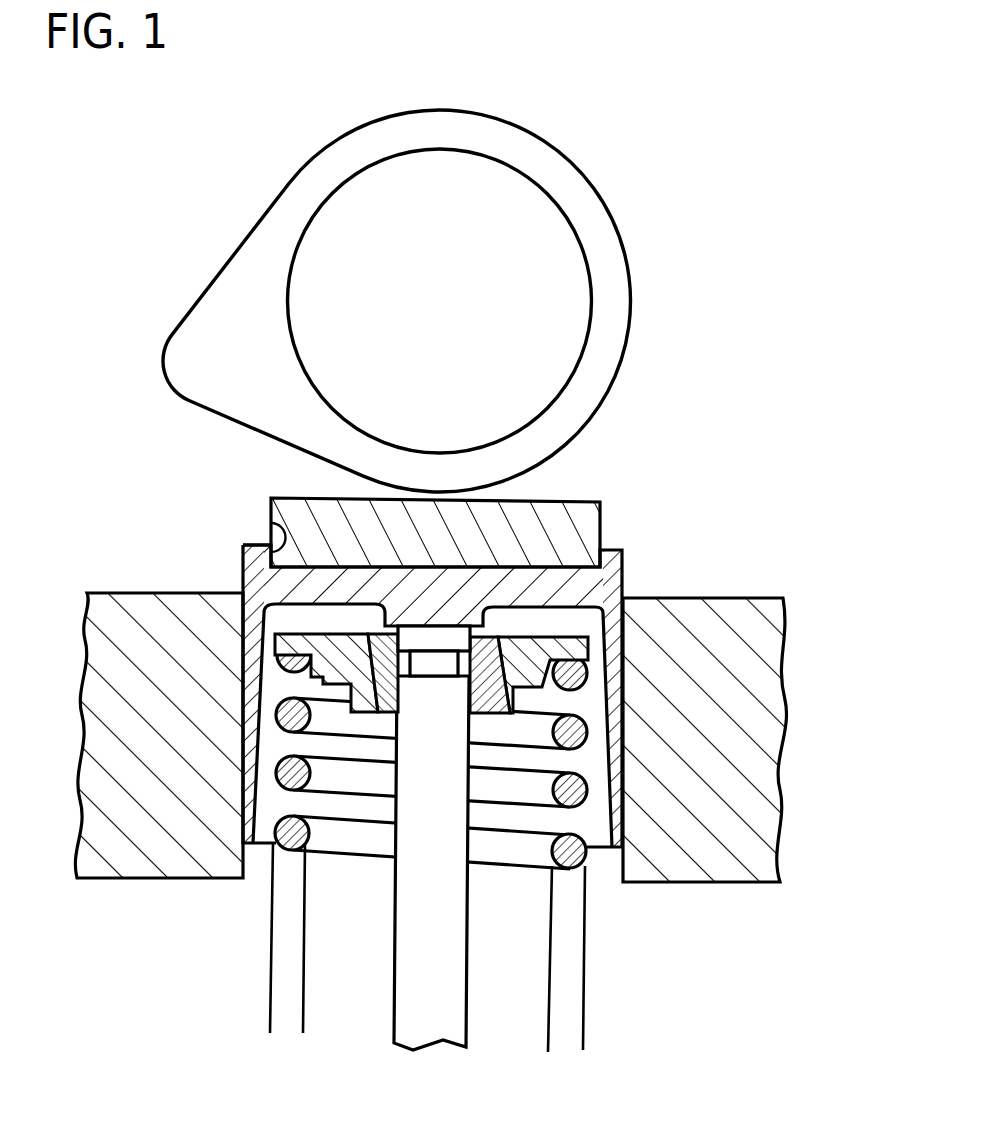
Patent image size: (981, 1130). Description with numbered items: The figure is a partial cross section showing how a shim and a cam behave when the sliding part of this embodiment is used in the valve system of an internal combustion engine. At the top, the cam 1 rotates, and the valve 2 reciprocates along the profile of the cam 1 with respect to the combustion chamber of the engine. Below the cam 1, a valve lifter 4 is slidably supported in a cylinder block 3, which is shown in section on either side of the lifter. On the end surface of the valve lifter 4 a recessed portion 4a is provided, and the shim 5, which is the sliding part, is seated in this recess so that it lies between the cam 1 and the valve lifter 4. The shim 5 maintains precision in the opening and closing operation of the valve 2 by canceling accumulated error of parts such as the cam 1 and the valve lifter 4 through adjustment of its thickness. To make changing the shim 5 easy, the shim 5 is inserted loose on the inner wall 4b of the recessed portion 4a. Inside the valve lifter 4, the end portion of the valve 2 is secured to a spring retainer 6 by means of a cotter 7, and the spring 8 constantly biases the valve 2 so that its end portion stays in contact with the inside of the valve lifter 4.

The cam 1 is at (603, 238).
The valve 2 is at (452, 998).
The cylinder block 3 is at (755, 659).
The valve lifter 4 is at (265, 590).
The recessed portion 4a is at (546, 567).
The inner wall 4b is at (283, 530).
The shim 5 is at (558, 523).
The spring retainer 6 is at (302, 645).
The cotter 7 is at (470, 665).
The spring 8 is at (277, 850).